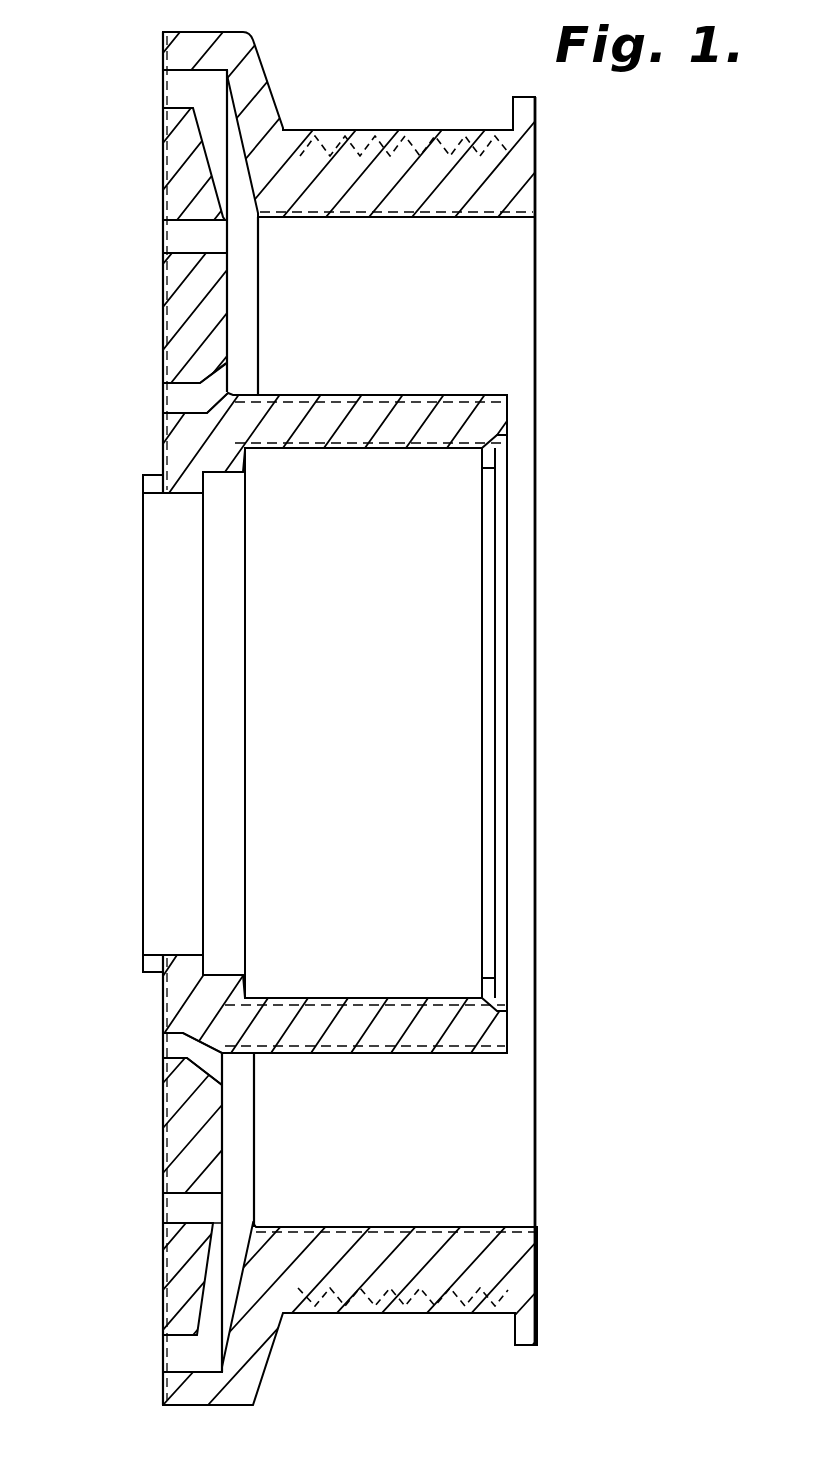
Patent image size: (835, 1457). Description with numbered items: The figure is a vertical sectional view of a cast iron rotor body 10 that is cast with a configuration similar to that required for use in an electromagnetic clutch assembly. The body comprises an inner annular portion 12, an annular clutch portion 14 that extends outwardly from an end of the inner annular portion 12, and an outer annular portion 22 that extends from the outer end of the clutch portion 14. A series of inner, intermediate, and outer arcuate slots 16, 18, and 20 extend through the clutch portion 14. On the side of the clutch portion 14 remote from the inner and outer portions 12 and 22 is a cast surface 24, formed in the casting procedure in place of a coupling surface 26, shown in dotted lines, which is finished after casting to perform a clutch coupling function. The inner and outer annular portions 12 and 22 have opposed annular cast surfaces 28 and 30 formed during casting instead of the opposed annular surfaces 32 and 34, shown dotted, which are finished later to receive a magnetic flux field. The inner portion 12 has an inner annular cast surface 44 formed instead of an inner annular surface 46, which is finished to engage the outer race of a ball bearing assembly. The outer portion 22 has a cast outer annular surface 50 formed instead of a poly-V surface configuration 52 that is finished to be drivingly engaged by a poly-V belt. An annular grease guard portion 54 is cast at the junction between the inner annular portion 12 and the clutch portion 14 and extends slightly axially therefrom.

The cast iron rotor body 10 is at (105, 165).
The inner annular portion 12 is at (490, 415).
The annular clutch portion 14 is at (185, 300).
The inner arcuate slot 16 is at (176, 412).
The intermediate arcuate slot 18 is at (172, 258).
The outer arcuate slot 20 is at (172, 108).
The outer annular portion 22 is at (525, 163).
The cast surface 24 is at (165, 345).
The coupling surface 26 is at (160, 175).
The annular cast surface 28 is at (320, 394).
The annular cast surface 30 is at (290, 218).
The annular surface 32 is at (390, 400).
The annular surface 34 is at (405, 216).
The inner annular cast surface 44 is at (286, 450).
The inner annular surface 46 is at (382, 452).
The cast outer annular surface 50 is at (305, 140).
The poly-V surface configuration 52 is at (470, 130).
The annular grease guard portion 54 is at (145, 482).